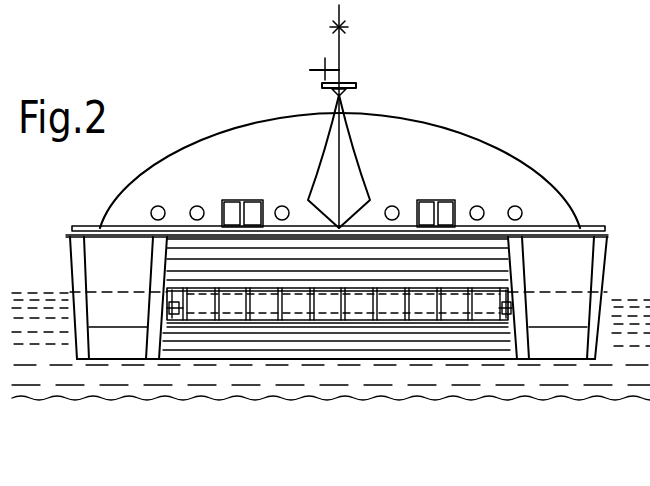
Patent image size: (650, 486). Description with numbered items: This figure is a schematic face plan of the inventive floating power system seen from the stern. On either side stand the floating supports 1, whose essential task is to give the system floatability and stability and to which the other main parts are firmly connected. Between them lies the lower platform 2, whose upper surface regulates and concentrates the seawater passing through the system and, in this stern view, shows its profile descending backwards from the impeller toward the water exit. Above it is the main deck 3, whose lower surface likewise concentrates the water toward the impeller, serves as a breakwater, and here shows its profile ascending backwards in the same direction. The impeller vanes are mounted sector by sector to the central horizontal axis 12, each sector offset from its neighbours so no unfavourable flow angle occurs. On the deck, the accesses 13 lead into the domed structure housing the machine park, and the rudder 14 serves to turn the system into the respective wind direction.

The floating supports 1 is at (115, 270).
The lower platform 2 is at (333, 335).
The main deck 3 is at (275, 252).
The central horizontal axis 12 is at (174, 316).
The accesses 13 is at (232, 212).
The rudder 14 is at (347, 157).